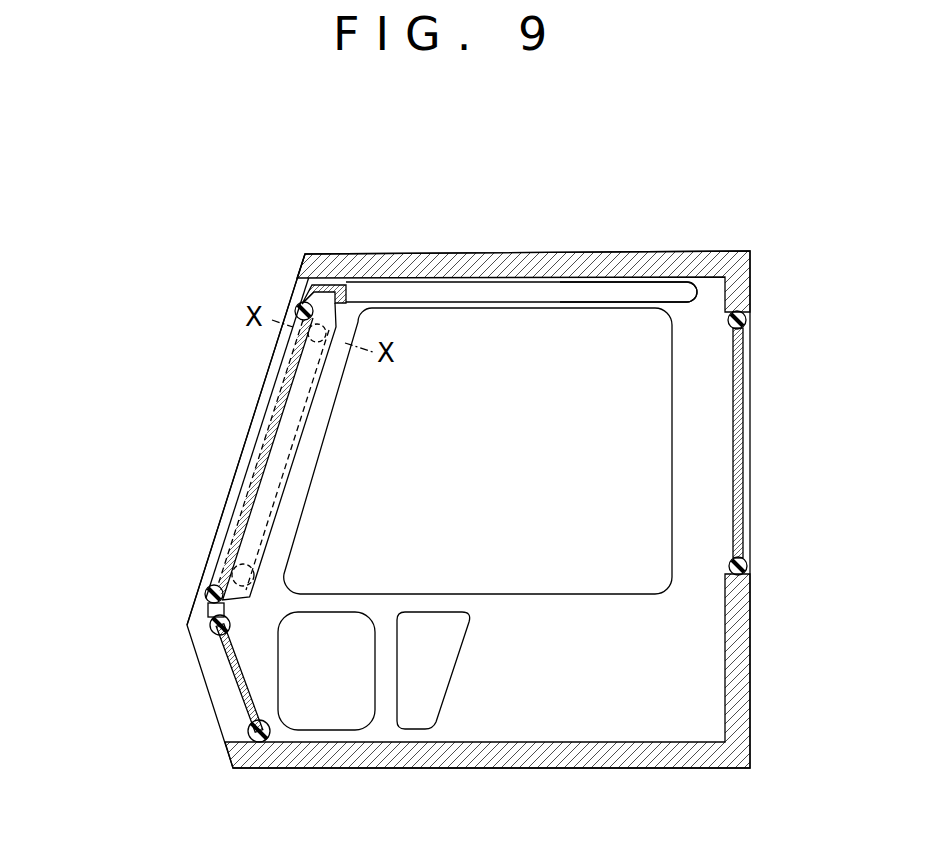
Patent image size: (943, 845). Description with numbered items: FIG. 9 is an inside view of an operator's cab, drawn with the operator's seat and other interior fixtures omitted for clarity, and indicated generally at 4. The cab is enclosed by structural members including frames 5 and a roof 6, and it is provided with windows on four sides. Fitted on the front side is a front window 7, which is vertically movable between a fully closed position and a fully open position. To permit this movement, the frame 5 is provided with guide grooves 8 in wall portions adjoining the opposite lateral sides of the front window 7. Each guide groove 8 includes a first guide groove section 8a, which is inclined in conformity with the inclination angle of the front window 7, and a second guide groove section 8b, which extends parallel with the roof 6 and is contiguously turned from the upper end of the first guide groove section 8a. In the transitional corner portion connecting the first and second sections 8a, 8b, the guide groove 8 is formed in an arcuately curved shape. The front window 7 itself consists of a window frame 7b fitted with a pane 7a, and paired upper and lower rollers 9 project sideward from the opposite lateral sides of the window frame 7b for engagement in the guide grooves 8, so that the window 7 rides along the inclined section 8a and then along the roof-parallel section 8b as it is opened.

The door 4 is at (697, 236).
The frame 5 is at (267, 378).
The roof 6 is at (440, 263).
The front window 7 is at (242, 477).
The pane 7a is at (233, 543).
The window frame 7b is at (333, 285).
The guide groove 8 is at (502, 290).
The first guide groove section 8a is at (287, 440).
The second guide groove section 8b is at (597, 290).
The roller 9 is at (296, 304).